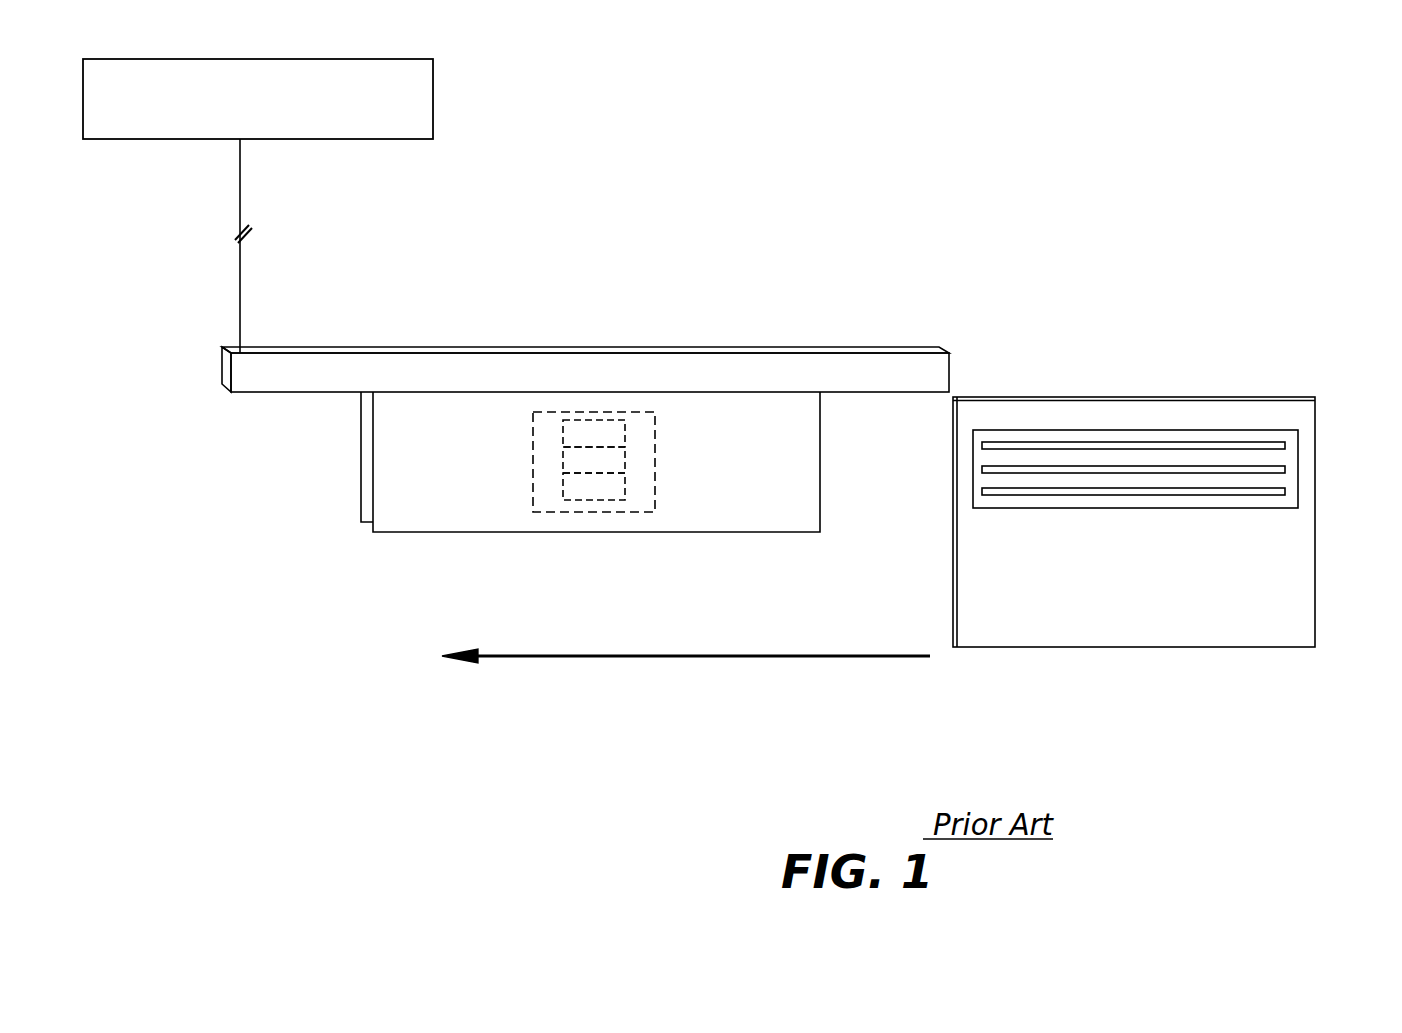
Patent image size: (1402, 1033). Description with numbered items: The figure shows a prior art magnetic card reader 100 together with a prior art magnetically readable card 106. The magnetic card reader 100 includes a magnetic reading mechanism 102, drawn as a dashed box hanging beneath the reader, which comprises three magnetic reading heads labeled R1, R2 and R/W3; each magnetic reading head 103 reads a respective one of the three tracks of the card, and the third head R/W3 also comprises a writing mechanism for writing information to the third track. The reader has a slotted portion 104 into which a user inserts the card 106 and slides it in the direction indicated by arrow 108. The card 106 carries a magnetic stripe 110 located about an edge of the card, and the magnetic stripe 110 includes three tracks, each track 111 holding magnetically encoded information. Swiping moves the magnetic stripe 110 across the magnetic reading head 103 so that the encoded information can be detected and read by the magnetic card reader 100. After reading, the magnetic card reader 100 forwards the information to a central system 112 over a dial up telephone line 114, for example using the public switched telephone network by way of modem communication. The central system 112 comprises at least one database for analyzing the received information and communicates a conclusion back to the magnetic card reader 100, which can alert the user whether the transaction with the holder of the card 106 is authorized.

The magnetic card reader 100 is at (902, 350).
The magnetic reading mechanism 102 is at (533, 455).
The magnetic reading head 103 is at (625, 428).
The slotted portion 104 is at (365, 445).
The magnetically readable card 106 is at (1235, 397).
The arrow 108 is at (688, 657).
The magnetic stripe 110 is at (1213, 508).
The track 111 is at (1262, 450).
The central system 112 is at (378, 139).
The dial up telephone line 114 is at (240, 308).